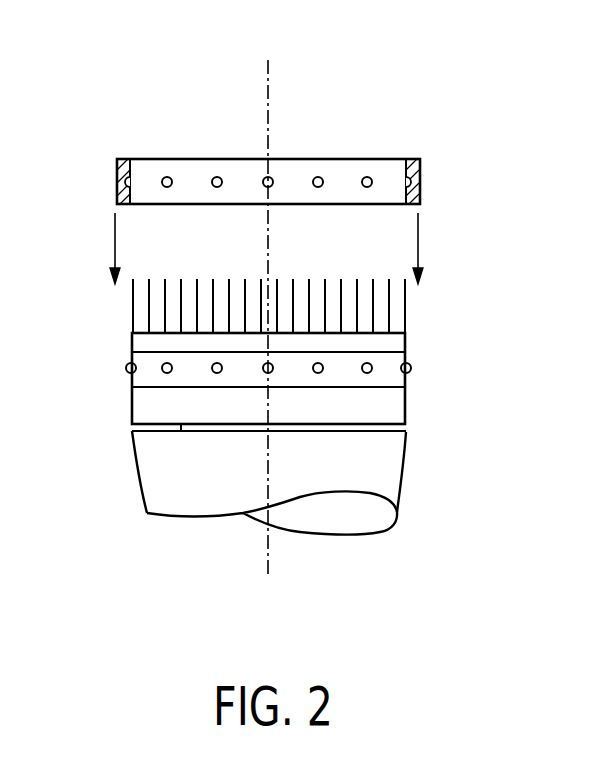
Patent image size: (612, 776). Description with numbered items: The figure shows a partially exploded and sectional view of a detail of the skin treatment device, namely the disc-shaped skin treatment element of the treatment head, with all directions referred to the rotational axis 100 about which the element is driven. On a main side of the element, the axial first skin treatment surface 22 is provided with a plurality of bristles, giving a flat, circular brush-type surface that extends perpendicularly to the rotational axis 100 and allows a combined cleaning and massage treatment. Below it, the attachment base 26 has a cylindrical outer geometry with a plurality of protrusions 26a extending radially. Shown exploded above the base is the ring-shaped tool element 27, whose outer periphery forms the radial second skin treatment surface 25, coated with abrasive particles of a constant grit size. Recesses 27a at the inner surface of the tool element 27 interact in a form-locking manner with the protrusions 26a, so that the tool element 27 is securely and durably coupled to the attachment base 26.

The rotational axis 100 is at (270, 84).
The radial second skin treatment surface 25 is at (153, 180).
The ring-shaped tool element 27 is at (433, 157).
The recesses 27a is at (316, 176).
The axial first skin treatment surface 22 is at (377, 318).
The attachment base 26 is at (145, 373).
The protrusions 26a is at (272, 373).